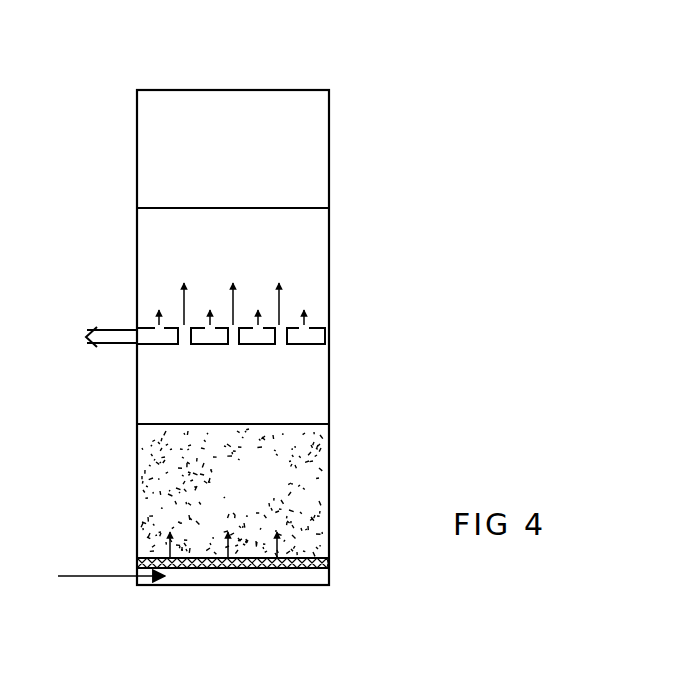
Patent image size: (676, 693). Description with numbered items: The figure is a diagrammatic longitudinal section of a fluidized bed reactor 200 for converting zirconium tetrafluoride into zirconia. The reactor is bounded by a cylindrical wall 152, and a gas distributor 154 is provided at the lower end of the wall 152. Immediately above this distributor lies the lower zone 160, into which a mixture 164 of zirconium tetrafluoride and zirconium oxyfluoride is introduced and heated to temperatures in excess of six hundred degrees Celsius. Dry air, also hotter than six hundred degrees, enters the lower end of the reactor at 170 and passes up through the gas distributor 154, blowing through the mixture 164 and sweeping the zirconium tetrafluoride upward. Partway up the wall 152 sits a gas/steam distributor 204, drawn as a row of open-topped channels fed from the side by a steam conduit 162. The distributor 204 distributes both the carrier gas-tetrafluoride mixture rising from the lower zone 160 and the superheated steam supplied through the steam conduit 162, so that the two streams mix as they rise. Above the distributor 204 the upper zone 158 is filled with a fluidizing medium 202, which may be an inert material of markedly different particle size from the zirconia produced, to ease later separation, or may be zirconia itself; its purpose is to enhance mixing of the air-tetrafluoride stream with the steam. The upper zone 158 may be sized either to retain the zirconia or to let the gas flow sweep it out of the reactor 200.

The fluidized bed reactor 200 is at (367, 160).
The cylindrical wall 152 is at (330, 387).
The fluidizing medium 202 is at (265, 243).
The upper zone 158 is at (285, 258).
The gas/steam distributor 204 is at (318, 333).
The steam conduit 162 is at (113, 340).
The mixture of ZrF4 and ZrOF2 164 is at (277, 493).
The lower zone 160 is at (283, 509).
The gas distributor 154 is at (328, 566).
The air inlet 170 is at (93, 574).